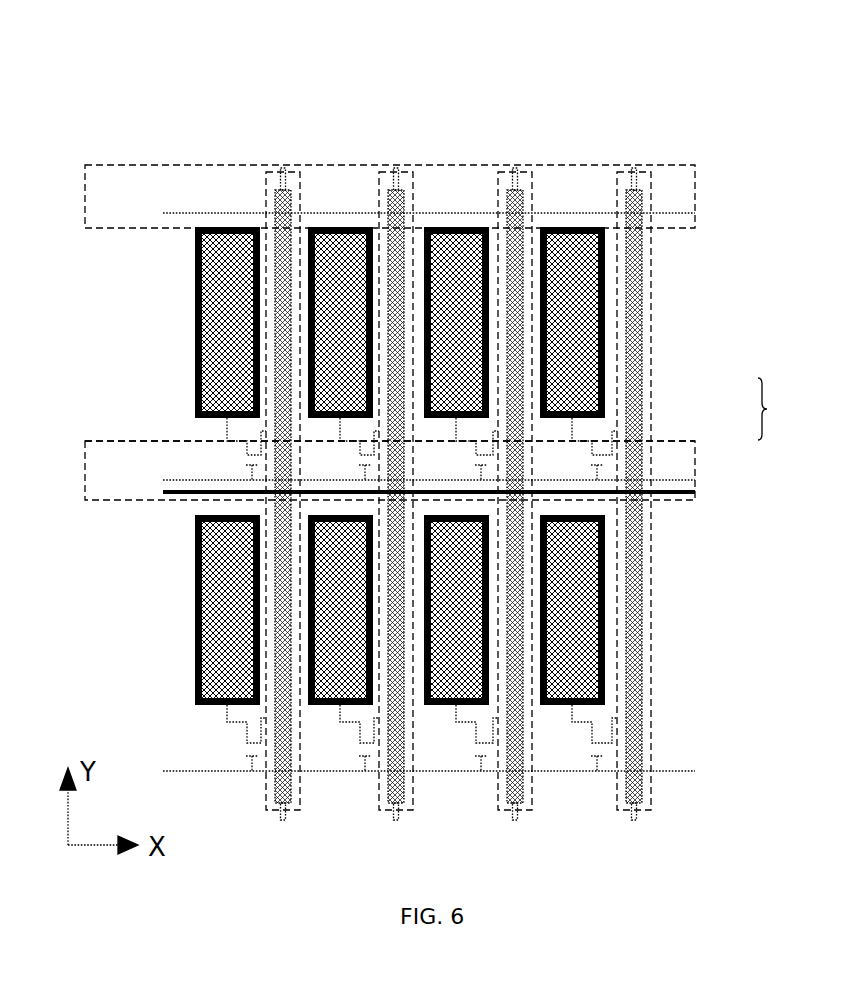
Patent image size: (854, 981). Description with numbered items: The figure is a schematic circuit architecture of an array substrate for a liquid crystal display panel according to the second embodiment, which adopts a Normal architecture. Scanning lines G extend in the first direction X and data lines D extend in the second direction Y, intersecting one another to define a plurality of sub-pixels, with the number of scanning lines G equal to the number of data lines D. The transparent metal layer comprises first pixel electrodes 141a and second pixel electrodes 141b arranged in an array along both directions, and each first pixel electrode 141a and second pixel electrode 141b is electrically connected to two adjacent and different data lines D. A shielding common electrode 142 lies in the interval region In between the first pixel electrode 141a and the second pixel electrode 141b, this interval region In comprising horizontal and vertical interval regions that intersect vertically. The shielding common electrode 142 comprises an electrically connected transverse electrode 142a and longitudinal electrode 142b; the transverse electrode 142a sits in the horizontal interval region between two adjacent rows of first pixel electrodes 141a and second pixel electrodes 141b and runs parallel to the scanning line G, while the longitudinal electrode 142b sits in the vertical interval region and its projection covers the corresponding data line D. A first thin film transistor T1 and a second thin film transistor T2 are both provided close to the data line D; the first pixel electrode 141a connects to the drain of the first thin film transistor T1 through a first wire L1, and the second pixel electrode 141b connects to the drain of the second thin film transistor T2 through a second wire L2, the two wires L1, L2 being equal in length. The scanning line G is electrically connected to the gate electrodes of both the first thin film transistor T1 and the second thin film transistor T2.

The interval region In is at (668, 441).
The data line D is at (458, 466).
The scanning line G is at (390, 478).
The first pixel electrode 141a is at (441, 795).
The second pixel electrode 141b is at (560, 800).
The shielding common electrode 142 is at (785, 409).
The transverse electrode 142a is at (652, 492).
The longitudinal electrode 142b is at (645, 441).
The first wire L1 is at (226, 441).
The second wire L2 is at (351, 442).
The first thin film transistor T1 is at (250, 471).
The second thin film transistor T2 is at (363, 471).